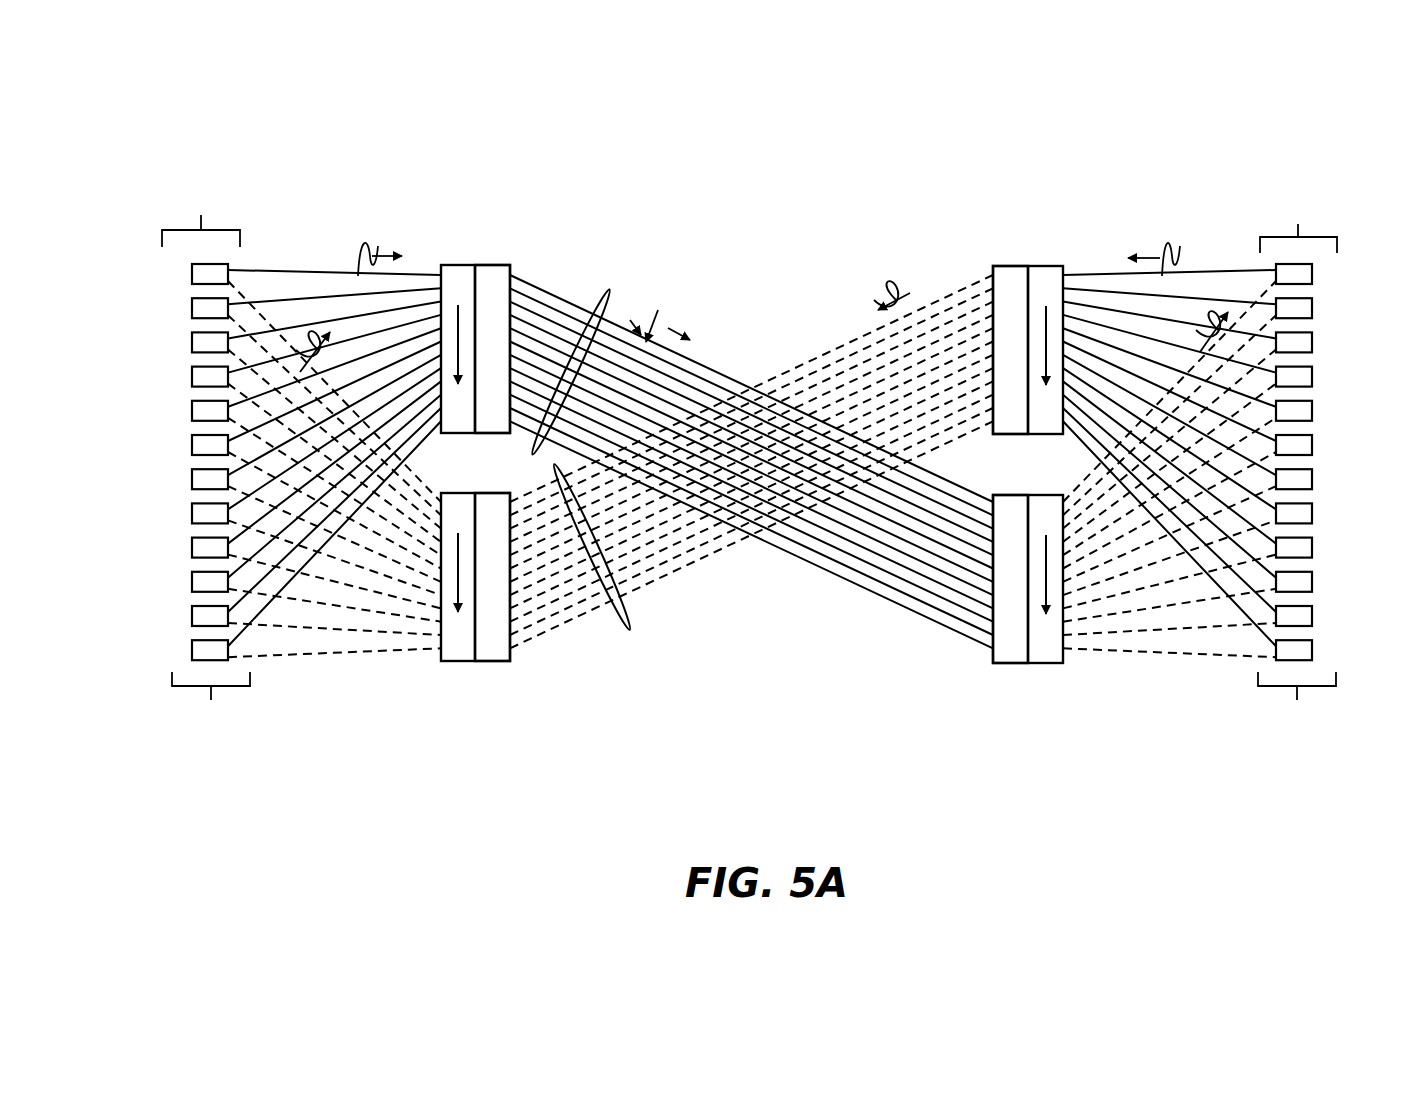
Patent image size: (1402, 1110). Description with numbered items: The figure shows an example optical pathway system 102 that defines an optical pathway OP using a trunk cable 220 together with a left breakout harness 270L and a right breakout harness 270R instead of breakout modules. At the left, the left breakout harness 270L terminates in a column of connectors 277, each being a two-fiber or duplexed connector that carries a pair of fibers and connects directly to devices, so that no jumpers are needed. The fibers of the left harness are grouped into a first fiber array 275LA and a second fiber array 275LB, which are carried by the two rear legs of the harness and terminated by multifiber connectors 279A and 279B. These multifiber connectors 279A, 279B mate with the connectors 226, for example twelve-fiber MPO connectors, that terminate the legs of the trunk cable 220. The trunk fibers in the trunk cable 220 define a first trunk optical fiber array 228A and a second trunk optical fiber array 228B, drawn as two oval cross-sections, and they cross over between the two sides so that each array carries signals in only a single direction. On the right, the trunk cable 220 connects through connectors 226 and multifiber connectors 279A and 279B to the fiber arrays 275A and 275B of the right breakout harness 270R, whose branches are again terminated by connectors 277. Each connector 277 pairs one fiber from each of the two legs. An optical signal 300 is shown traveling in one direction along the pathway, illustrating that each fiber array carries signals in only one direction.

The optical pathway system 102 is at (318, 82).
The left breakout harness 270L is at (266, 153).
The right breakout harness 270R is at (1238, 140).
The connectors 277 is at (749, 217).
The first fiber array of left breakout harness 275LA is at (345, 255).
The second fiber array of left breakout harness 275LB is at (342, 676).
The first fiber array 275A is at (1188, 258).
The second fiber array 275B is at (1192, 678).
The first multifiber connector 279A is at (466, 265).
The second multifiber connector 279B is at (467, 661).
The connectors 226 is at (500, 265).
The trunk cable 220 is at (748, 326).
The first trunk optical fiber array 228A is at (603, 328).
The second trunk optical fiber array 228B is at (625, 598).
The optical signal 300 is at (652, 312).